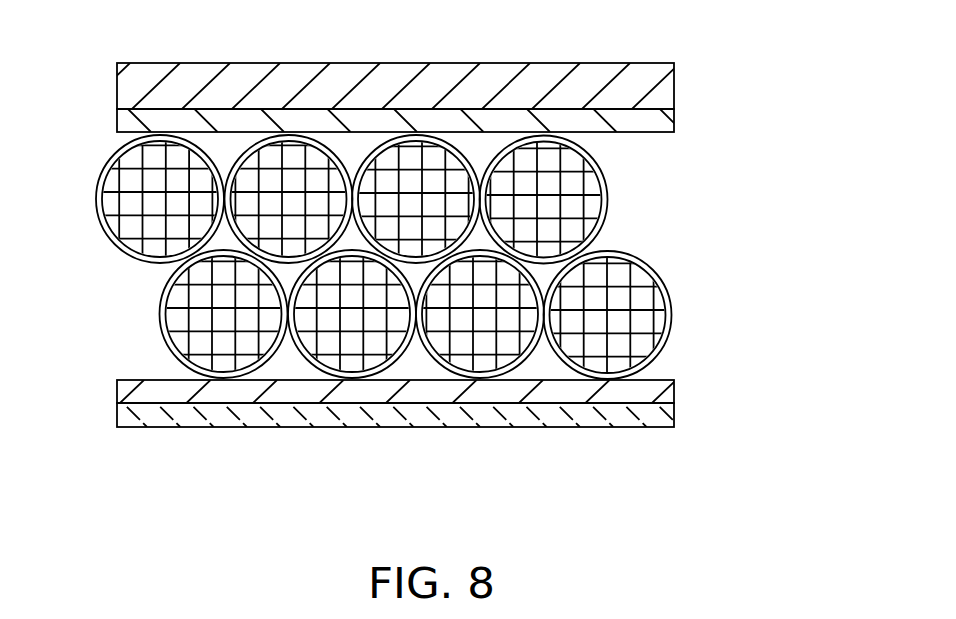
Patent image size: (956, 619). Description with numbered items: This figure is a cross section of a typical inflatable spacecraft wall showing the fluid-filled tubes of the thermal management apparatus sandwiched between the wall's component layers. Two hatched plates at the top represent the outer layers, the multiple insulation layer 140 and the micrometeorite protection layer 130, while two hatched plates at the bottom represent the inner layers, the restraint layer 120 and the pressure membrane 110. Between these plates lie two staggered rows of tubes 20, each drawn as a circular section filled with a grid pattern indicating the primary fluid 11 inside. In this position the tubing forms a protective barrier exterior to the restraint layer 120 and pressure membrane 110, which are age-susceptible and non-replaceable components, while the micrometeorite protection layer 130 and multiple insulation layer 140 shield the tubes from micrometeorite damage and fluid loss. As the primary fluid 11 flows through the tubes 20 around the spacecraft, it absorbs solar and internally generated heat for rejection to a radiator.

The pressure membrane 110 is at (682, 85).
The restraint layer 120 is at (688, 123).
The tube 20 is at (431, 257).
The primary fluid 11 is at (120, 212).
The micrometeorite protection layer (MMOD) 130 is at (682, 397).
The multiple insulation layer (MLI) 140 is at (685, 427).